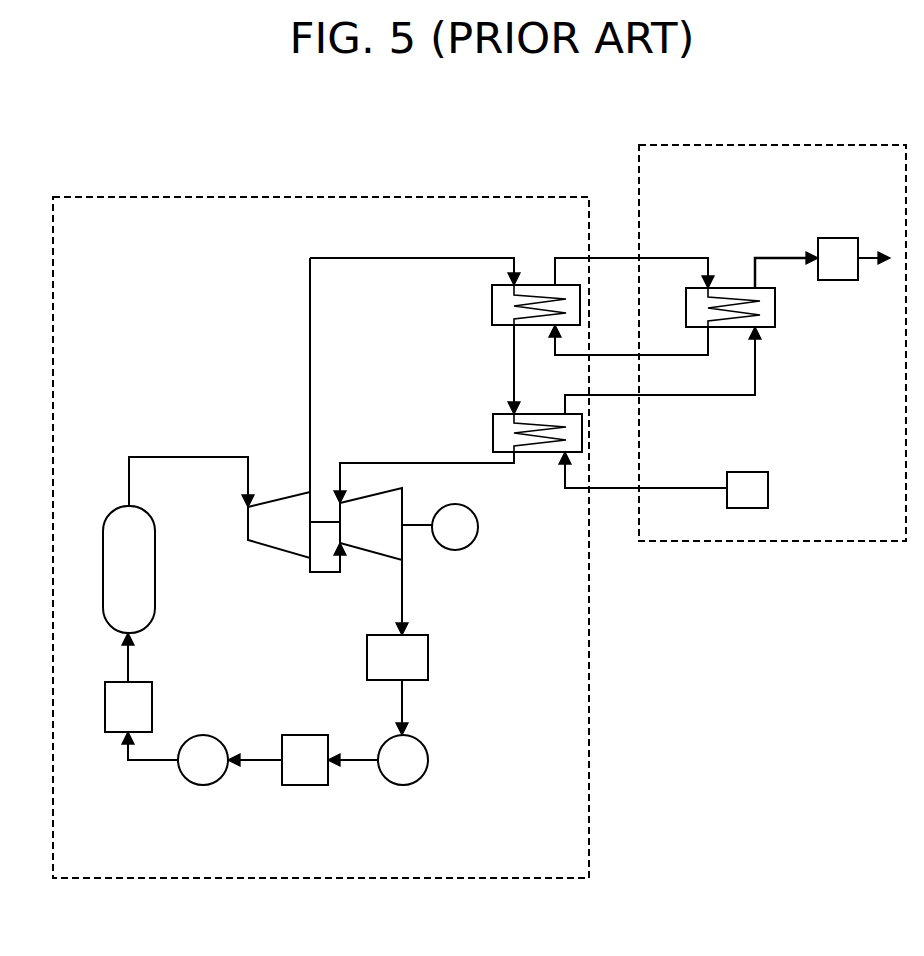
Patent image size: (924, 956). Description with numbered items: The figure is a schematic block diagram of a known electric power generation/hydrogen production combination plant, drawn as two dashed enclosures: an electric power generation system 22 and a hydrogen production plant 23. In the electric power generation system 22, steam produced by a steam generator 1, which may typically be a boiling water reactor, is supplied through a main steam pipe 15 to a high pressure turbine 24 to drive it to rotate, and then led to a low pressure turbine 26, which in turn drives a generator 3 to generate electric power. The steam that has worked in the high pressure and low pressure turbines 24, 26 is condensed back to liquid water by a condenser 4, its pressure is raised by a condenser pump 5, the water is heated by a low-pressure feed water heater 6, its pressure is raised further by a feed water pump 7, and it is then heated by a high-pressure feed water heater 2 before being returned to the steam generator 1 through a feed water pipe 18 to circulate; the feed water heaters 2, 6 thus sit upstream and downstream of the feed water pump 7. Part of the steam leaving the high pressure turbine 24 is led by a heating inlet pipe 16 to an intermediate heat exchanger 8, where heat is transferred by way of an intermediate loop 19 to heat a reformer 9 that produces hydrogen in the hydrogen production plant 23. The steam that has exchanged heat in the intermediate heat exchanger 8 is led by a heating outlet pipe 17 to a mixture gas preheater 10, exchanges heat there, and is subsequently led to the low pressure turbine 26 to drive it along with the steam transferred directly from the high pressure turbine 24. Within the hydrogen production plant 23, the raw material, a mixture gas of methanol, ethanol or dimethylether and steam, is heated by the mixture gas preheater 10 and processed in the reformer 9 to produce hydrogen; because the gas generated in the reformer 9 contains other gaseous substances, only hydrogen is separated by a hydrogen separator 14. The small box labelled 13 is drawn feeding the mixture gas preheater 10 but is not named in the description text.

The steam generator 1 is at (156, 567).
The high-pressure feed water heater 2 is at (105, 722).
The generator 3 is at (455, 550).
The condenser 4 is at (367, 655).
The condenser pump 5 is at (403, 785).
The low-pressure feed water heater 6 is at (305, 785).
The feed water pump 7 is at (203, 785).
The intermediate heat exchanger 8 is at (492, 310).
The reformer 9 is at (775, 308).
The mixture gas preheater 10 is at (493, 420).
The hot water source 13 is at (768, 485).
The hydrogen separator 14 is at (838, 238).
The main steam pipe 15 is at (236, 460).
The heating inlet pipe of intermediate heat exchanger 16 is at (344, 257).
The heating outlet pipe of intermediate heat exchanger 17 is at (514, 372).
The feed water pipe 18 is at (128, 665).
The intermediate loop 19 is at (677, 257).
The electric power generation system 22 is at (589, 770).
The hydrogen production plant 23 is at (686, 541).
The high pressure turbine 24 is at (262, 545).
The low pressure turbine 26 is at (370, 548).